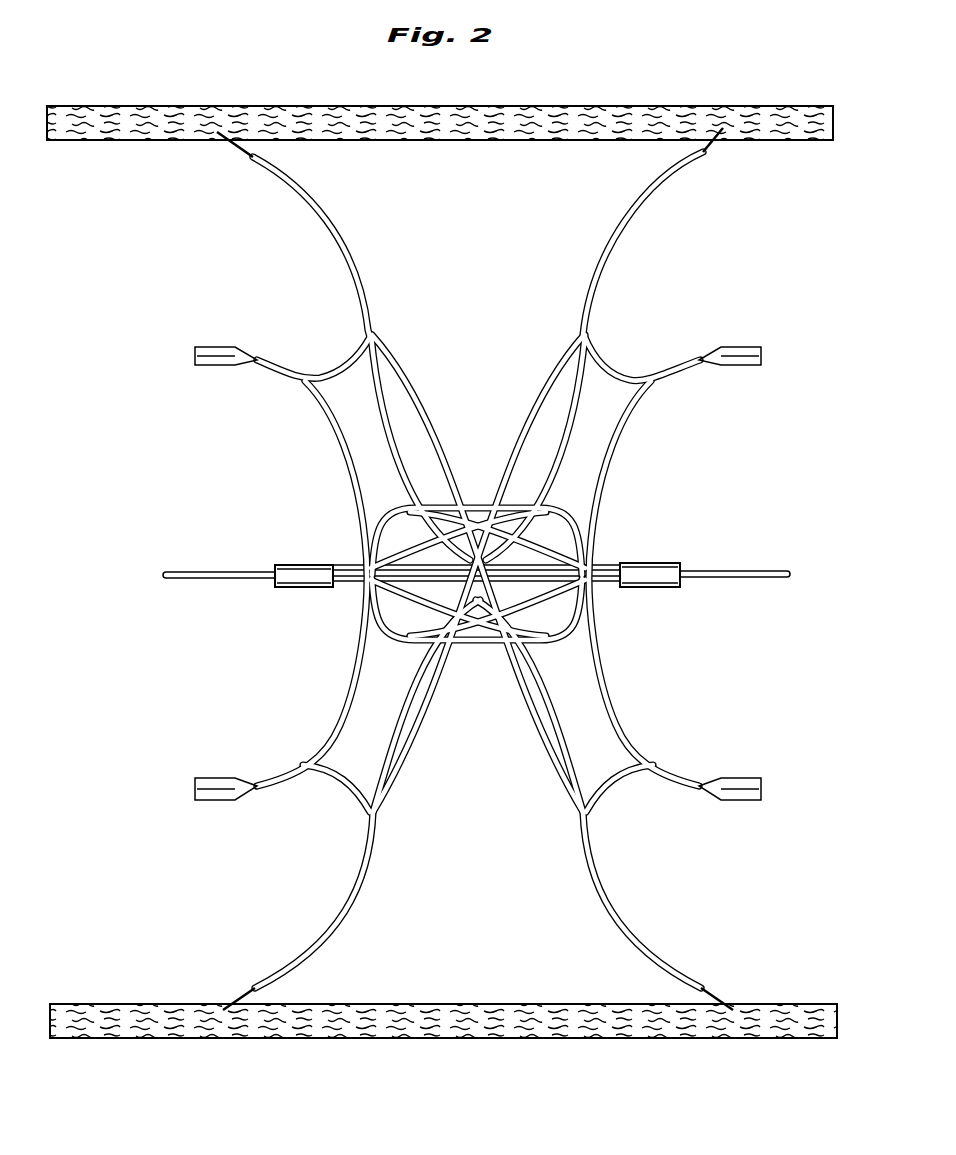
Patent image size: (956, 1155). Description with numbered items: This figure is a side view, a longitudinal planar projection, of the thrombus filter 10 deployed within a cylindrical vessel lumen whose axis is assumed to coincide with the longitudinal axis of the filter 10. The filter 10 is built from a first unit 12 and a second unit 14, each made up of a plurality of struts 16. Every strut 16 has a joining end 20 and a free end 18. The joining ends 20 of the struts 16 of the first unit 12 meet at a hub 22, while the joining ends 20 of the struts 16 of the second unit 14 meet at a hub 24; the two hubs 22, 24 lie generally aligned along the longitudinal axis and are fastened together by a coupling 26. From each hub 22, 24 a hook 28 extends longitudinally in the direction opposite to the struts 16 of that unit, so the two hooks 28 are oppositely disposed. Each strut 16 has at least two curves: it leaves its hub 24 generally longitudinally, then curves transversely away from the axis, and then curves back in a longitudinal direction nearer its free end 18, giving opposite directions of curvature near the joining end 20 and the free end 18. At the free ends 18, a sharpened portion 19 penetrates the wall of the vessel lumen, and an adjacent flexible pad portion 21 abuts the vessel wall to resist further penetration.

The thrombus filter 10 is at (748, 298).
The first unit 12 is at (690, 551).
The second unit 14 is at (241, 548).
The strut 16 is at (335, 216).
The free end 18 is at (248, 162).
The sharpened portion 19 is at (720, 128).
The joining end 20 is at (322, 588).
The flexible pad portion 21 is at (750, 140).
The hub 22 is at (640, 562).
The hub 24 is at (302, 563).
The coupling 26 is at (468, 645).
The hook 28 is at (188, 578).